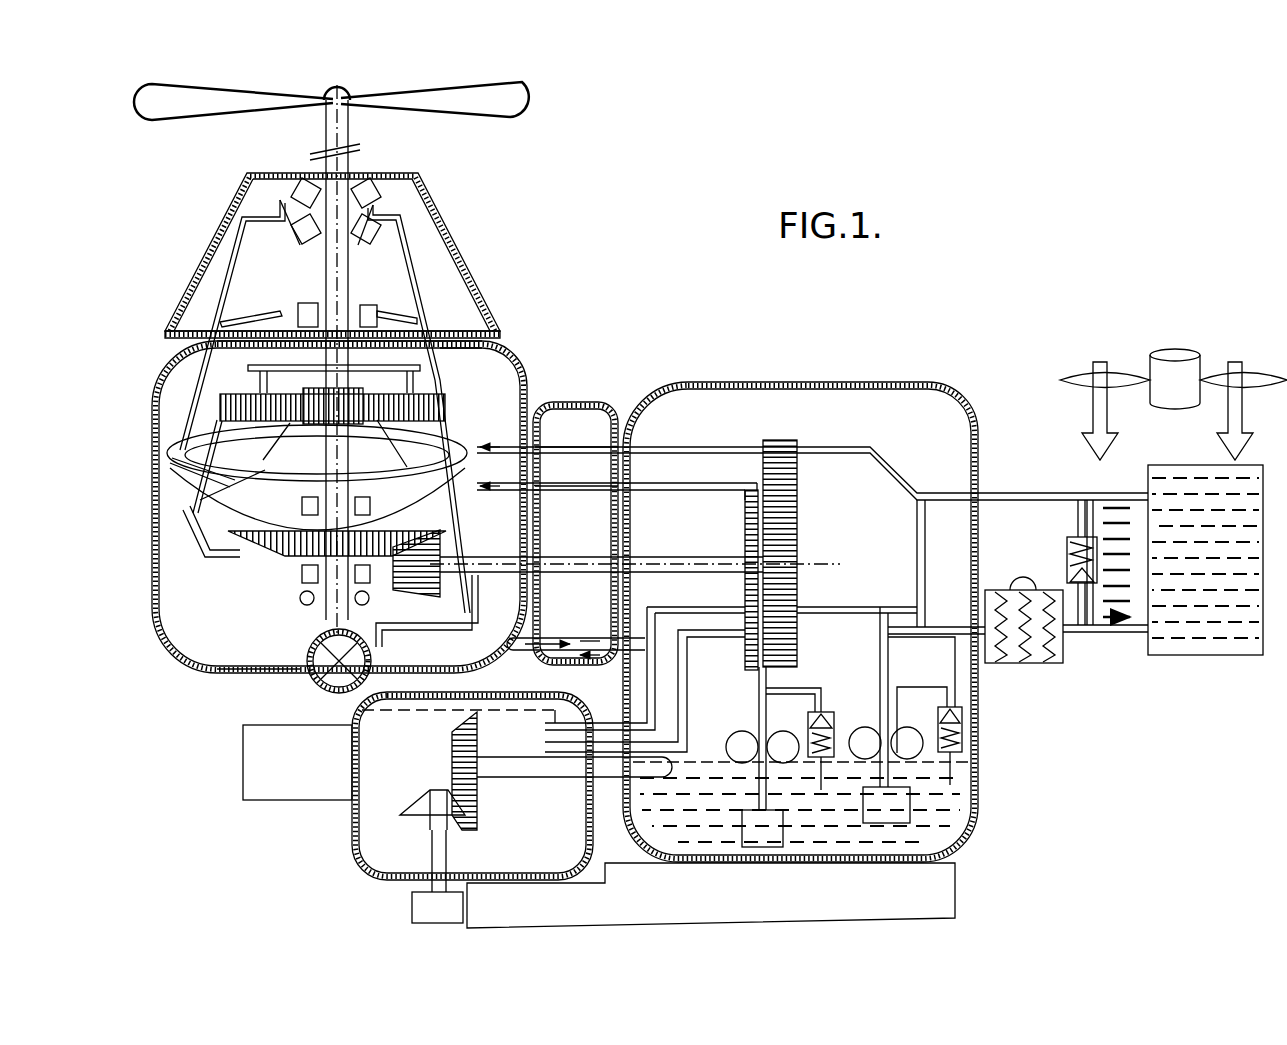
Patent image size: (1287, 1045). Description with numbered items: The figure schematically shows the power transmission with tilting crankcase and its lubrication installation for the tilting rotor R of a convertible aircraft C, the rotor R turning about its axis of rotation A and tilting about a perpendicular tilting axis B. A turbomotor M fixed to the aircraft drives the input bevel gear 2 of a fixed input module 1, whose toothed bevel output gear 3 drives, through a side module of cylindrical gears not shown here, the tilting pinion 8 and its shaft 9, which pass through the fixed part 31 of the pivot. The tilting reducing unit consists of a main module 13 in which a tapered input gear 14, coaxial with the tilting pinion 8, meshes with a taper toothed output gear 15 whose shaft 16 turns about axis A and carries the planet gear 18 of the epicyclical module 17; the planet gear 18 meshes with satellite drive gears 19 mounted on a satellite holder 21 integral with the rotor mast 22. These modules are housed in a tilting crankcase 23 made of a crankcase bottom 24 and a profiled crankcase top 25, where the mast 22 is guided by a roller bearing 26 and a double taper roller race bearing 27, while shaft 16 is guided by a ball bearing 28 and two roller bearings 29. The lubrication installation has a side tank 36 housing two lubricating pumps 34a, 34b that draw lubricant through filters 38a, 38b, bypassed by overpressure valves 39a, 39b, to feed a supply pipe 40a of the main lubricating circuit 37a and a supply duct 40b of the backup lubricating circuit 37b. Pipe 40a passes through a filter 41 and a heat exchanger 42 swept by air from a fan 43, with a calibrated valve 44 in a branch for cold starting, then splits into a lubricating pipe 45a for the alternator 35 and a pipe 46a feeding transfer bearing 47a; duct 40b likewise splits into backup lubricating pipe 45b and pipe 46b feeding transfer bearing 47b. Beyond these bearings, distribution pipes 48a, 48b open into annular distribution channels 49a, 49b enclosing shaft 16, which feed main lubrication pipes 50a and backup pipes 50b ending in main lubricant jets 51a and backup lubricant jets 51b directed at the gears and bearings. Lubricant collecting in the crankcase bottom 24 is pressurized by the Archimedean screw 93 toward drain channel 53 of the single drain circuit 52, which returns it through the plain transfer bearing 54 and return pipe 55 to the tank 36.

The fixed input module 1 is at (350, 826).
The input bevel gear 2 is at (425, 808).
The toothed bevel output gear 3 is at (455, 757).
The tilting pinion 8 is at (782, 488).
The shaft 9 is at (672, 557).
The main module 13 is at (210, 600).
The tapered input gear 14 is at (430, 565).
The taper toothed output gear 15 is at (272, 548).
The shaft 16 is at (240, 430).
The epicyclical module 17 is at (470, 358).
The planet gear 18 is at (300, 392).
The satellite drive gears 19 is at (460, 395).
The satellite holder 21 is at (210, 331).
The mast 22 is at (330, 267).
The tilting crankcase 23 is at (180, 303).
The crankcase bottom 24 is at (155, 545).
The crankcase top 25 is at (445, 215).
The roller bearing 26 is at (378, 315).
The double taper roller race bearing 27 is at (365, 195).
The ball bearing 28 is at (302, 602).
The roller bearings 29 is at (362, 505).
The fixed part of pivot 31 is at (580, 402).
The lubricating pump 34a is at (905, 743).
The lubricating pump 34b is at (745, 750).
The alternator 35 is at (262, 748).
The side tank 36 is at (965, 838).
The main lubricating circuit 37a is at (905, 468).
The backup lubricating circuit 37b is at (688, 478).
The filter 38a is at (893, 810).
The filter 38b is at (772, 830).
The overpressure valve 39a is at (962, 718).
The overpressure valve 39b is at (826, 712).
The supply pipe 40a is at (927, 620).
The supply duct 40b is at (772, 686).
The filter 41 is at (1045, 650).
The heat exchanger 42 is at (1225, 620).
The fan 43 is at (1162, 378).
The calibrated valve 44 is at (1067, 545).
The lubricating pipe 45a is at (895, 606).
The backup lubricating pipe 45b is at (700, 637).
The pipe 46a is at (857, 447).
The pipe 46b is at (752, 488).
The transfer bearing 47a is at (545, 445).
The transfer bearing 47b is at (548, 492).
The distribution pipe 48a is at (500, 445).
The distribution pipe 48b is at (470, 492).
The annular distribution channel 49a is at (260, 470).
The annular distribution channel 49b is at (225, 480).
The main lubrication pipes 50a is at (380, 315).
The backup pipes 50b is at (240, 242).
The main lubricant jets 51a is at (380, 213).
The backup lubricant jets 51b is at (282, 210).
The single drain circuit 52 is at (585, 663).
The drain channel 53 is at (508, 636).
The plain transfer bearing 54 is at (535, 652).
The return pipe 55 is at (590, 640).
The Archimedean screw 93 is at (322, 676).
The axis of rotation A is at (332, 121).
The tilting axis B is at (302, 578).
The convertible aircraft C is at (632, 882).
The rotor R is at (510, 105).
The turbomotor M is at (437, 908).